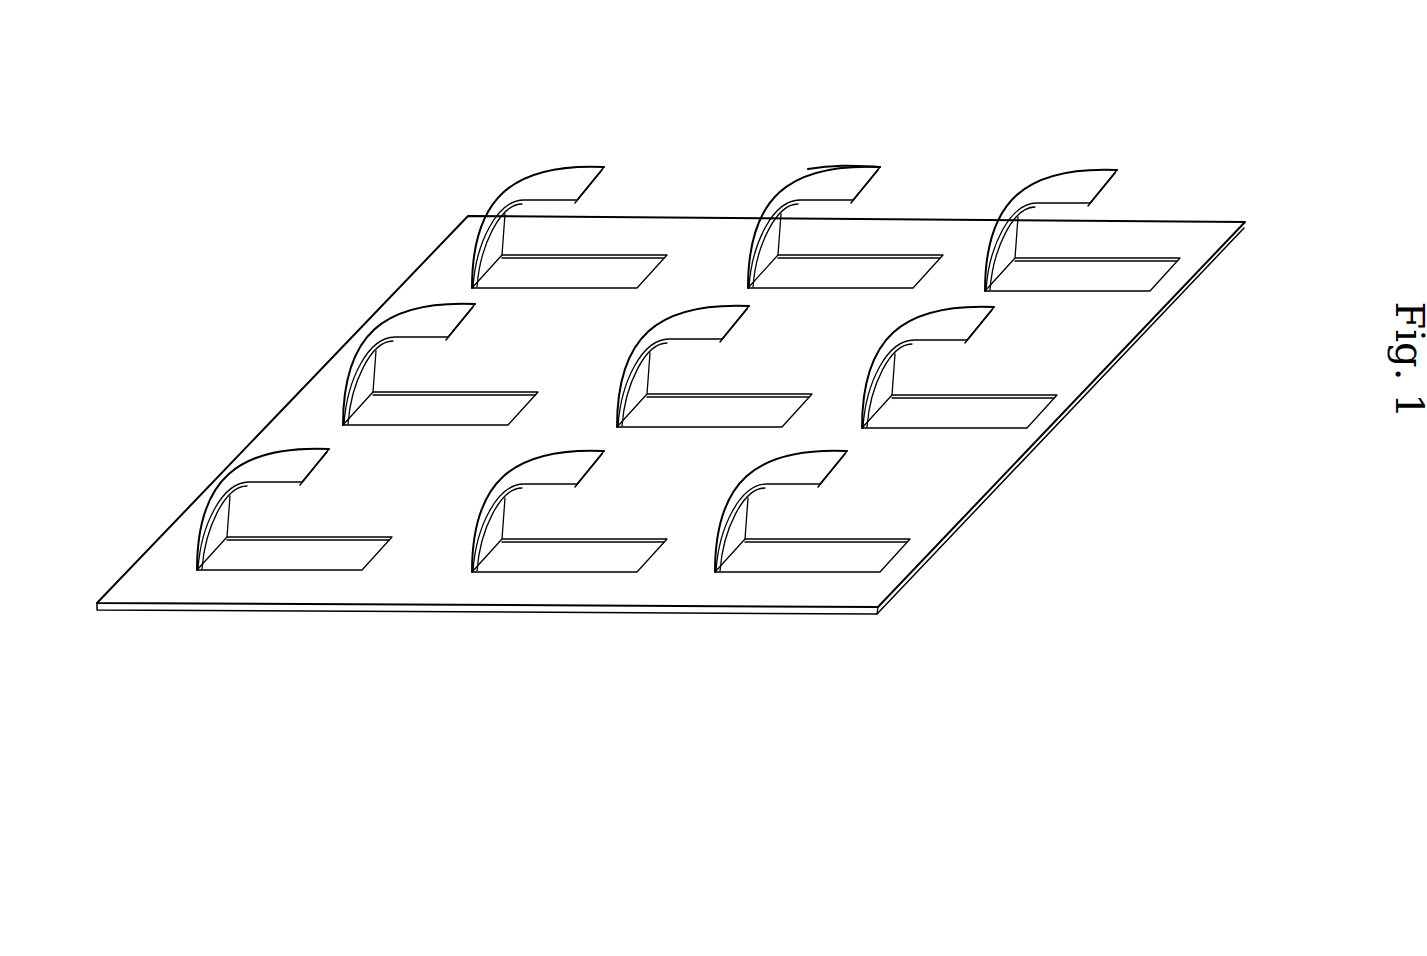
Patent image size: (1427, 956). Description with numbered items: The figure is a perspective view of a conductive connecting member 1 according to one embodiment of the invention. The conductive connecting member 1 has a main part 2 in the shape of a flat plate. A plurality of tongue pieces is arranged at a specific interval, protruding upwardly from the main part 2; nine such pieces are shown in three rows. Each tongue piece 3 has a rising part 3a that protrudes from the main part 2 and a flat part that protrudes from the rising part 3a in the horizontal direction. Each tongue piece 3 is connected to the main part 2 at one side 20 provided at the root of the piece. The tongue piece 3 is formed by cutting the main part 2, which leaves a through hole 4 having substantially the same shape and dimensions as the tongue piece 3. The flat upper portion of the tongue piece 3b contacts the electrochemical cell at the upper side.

The conductive connecting member 1 is at (1203, 180).
The main part 2 is at (1105, 346).
The tongue piece 3 is at (562, 151).
The rising part 3a is at (749, 265).
The tongue piece 3b is at (847, 177).
The through hole 4 is at (620, 264).
The one side 20 is at (501, 552).